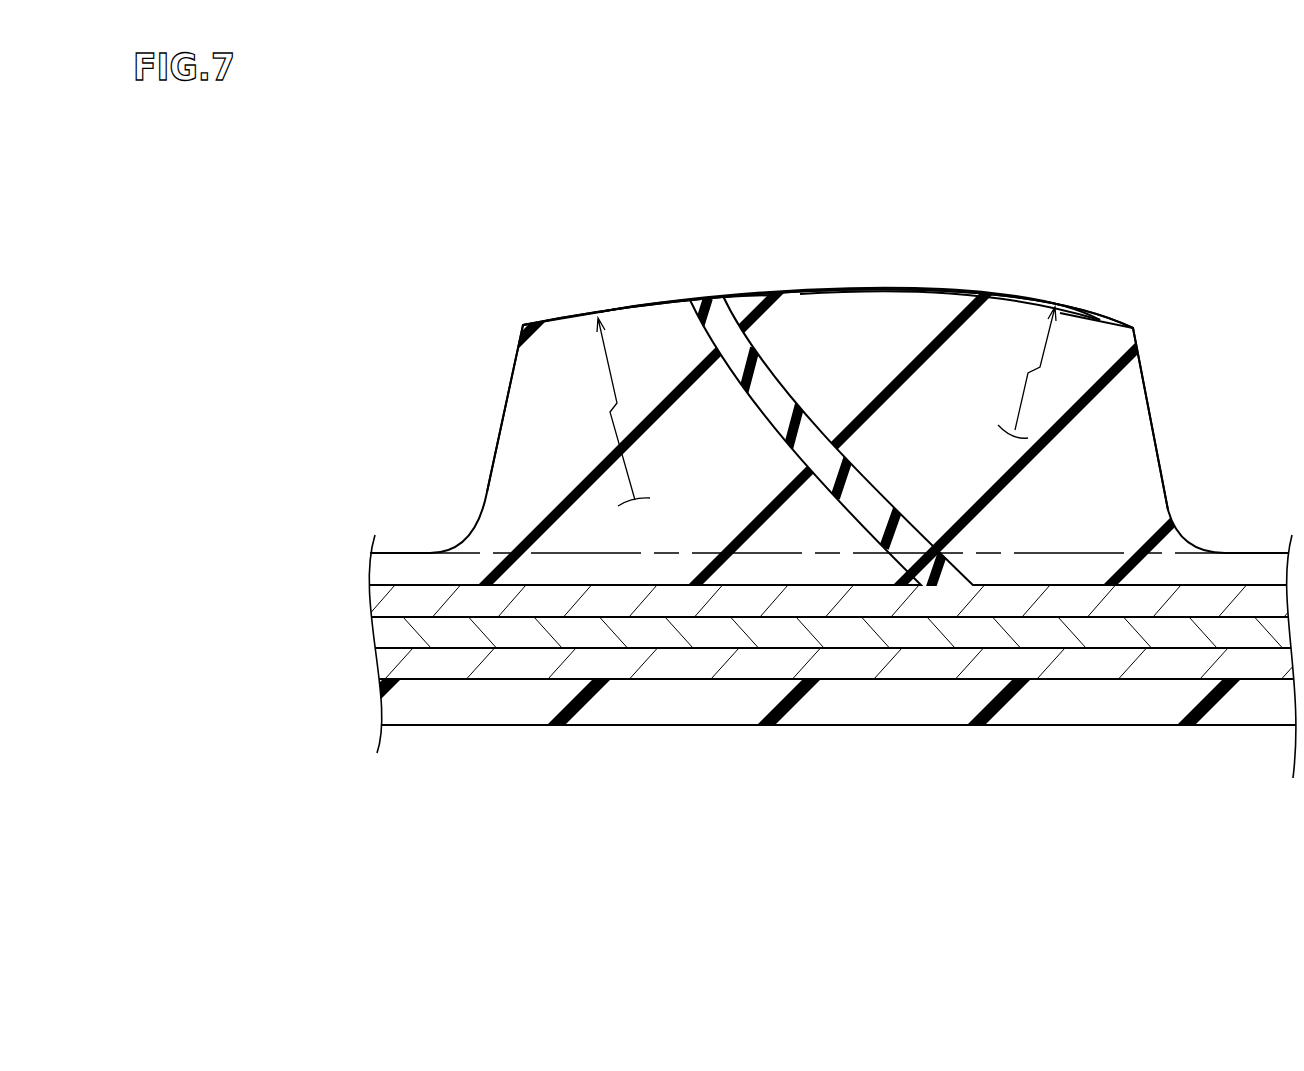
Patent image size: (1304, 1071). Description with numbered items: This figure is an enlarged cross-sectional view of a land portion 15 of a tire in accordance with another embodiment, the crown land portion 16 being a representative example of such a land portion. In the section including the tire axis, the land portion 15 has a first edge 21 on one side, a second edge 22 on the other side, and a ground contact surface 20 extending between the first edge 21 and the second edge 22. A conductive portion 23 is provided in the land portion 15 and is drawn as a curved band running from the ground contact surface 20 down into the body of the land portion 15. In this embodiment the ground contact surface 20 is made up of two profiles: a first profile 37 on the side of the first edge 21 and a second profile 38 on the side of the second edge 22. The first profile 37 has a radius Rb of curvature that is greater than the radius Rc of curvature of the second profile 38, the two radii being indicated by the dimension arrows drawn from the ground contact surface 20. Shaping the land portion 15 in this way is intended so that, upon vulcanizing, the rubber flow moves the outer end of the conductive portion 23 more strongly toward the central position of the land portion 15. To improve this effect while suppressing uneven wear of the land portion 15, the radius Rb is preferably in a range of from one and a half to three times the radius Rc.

The land portion 15 is at (786, 498).
The crown land portion 16 is at (828, 308).
The ground contact surface 20 is at (742, 176).
The first edge 21 is at (523, 325).
The second edge 22 is at (1133, 328).
The conductive portion 23 is at (767, 398).
The first profile 37 is at (672, 293).
The second profile 38 is at (941, 281).
The radius of curvature of the first profile Rb is at (636, 412).
The radius of curvature of the second profile Rc is at (1018, 372).